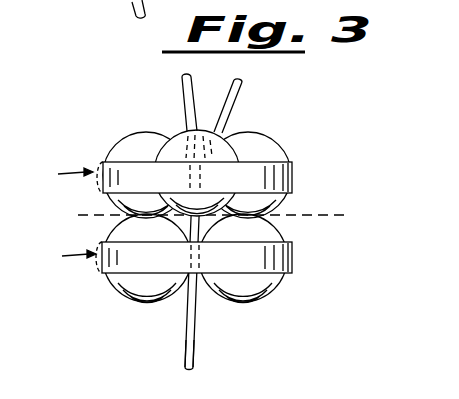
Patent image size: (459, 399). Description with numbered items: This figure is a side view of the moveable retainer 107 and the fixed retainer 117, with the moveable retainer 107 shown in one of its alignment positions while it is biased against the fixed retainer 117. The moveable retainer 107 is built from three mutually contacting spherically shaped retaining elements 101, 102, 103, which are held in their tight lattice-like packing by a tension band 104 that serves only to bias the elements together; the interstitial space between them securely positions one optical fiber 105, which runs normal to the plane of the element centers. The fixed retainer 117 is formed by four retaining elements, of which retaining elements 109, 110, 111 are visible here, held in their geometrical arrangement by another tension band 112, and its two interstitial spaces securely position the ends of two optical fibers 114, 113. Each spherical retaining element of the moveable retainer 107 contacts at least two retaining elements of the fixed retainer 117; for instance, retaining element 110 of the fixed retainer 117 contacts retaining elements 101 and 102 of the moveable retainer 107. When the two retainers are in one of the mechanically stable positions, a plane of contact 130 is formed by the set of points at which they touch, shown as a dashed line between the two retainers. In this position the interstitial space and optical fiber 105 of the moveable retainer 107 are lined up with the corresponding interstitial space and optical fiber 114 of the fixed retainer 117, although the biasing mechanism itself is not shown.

The retaining element 101 is at (130, 282).
The retaining element 102 is at (258, 286).
The retaining element 103 is at (181, 300).
The tension band 104 is at (263, 237).
The optical fiber 105 is at (187, 334).
The moveable retainer 107 is at (65, 258).
The retaining element 109 is at (130, 149).
The retaining element 110 is at (178, 146).
The retaining element 111 is at (255, 147).
The tension band 112 is at (277, 195).
The optical fiber 113 is at (237, 100).
The optical fiber 114 is at (186, 111).
The fixed retainer 117 is at (63, 176).
The plane of contact 130 is at (305, 218).